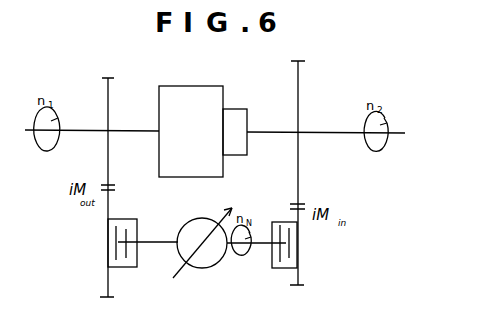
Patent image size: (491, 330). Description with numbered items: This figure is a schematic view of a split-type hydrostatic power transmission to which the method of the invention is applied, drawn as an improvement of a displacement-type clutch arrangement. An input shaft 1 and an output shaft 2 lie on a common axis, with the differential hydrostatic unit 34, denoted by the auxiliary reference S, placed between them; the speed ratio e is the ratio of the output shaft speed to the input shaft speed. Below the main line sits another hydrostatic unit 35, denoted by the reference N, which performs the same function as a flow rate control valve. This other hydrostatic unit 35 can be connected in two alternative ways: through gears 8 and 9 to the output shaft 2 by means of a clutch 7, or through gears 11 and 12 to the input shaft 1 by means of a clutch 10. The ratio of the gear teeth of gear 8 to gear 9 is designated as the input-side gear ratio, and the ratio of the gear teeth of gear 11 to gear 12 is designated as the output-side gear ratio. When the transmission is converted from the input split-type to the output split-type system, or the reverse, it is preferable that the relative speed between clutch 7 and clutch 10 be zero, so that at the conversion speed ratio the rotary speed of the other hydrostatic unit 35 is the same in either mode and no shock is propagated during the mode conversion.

The input shaft 1 is at (68, 128).
The output shaft 2 is at (345, 130).
The clutch 7 is at (268, 272).
The gear 8 is at (304, 271).
The gear 9 is at (302, 101).
The clutch 10 is at (130, 272).
The gear 11 is at (100, 271).
The gear 12 is at (112, 99).
The differential hydrostatic unit 34 is at (203, 78).
The other hydrostatic unit 35 is at (200, 271).